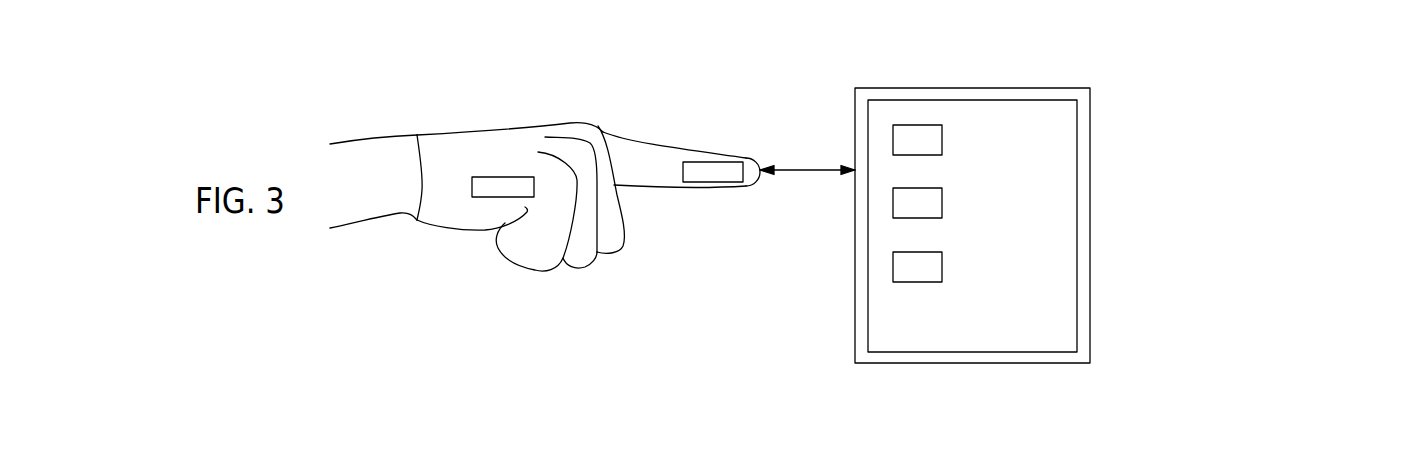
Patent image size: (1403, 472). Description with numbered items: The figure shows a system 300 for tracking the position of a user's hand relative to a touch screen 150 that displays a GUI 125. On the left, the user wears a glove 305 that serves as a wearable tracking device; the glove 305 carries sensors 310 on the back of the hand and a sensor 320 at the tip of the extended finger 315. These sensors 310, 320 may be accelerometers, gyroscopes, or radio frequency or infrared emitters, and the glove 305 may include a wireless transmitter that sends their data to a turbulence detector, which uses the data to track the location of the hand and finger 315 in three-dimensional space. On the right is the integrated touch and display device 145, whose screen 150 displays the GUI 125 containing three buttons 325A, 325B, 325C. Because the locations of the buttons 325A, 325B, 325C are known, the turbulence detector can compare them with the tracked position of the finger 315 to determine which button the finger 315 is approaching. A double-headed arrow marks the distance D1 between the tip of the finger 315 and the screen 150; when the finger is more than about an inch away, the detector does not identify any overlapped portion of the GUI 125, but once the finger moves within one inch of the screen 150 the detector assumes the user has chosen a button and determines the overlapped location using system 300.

The system 300 is at (410, 49).
The glove 305 is at (463, 132).
The sensors 310 is at (507, 177).
The finger 315 is at (745, 157).
The sensor 320 is at (683, 170).
The distance D1 is at (820, 170).
The integrated touch and display device 145 is at (938, 88).
The touch screen 150 is at (1077, 202).
The GUI 125 is at (1045, 285).
The button 325A is at (942, 133).
The button 325B is at (942, 197).
The button 325C is at (942, 260).